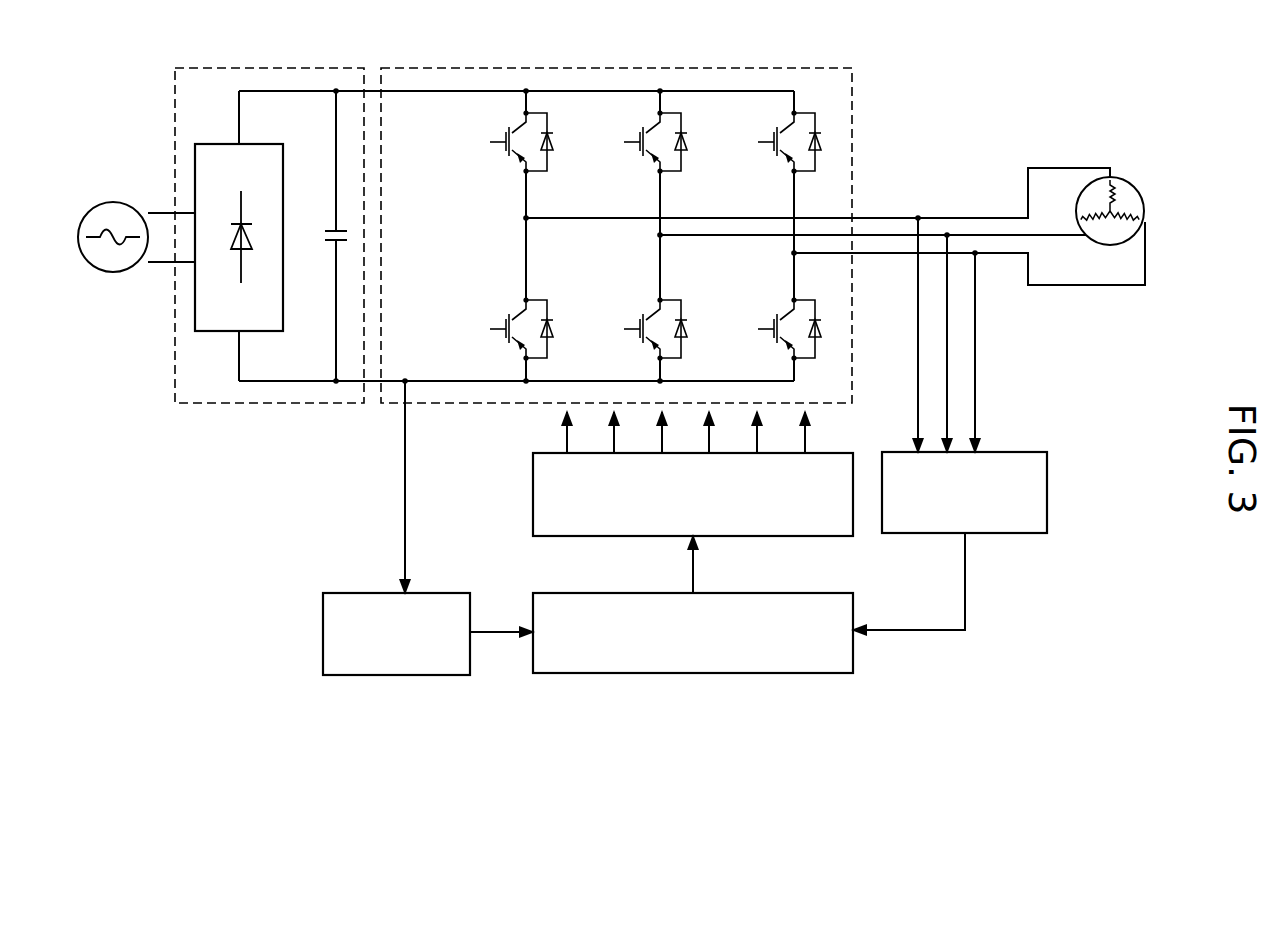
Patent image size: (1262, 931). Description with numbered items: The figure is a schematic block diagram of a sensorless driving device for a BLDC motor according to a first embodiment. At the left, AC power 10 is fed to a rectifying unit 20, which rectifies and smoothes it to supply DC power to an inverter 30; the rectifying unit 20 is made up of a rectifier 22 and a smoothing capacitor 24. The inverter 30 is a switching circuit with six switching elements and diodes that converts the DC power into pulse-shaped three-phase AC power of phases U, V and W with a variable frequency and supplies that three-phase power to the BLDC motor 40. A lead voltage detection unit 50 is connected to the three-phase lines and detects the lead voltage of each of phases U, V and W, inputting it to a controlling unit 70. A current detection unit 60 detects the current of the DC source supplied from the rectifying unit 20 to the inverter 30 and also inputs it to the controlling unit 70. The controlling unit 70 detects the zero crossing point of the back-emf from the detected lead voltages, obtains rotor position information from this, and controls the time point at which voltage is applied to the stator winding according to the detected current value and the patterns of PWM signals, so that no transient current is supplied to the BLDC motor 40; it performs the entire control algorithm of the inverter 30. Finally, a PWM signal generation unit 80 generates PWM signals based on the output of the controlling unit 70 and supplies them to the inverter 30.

The AC power 10 is at (93, 206).
The rectifying unit 20 is at (306, 68).
The rectifier 22 is at (258, 144).
The smoothing capacitor 24 is at (326, 231).
The inverter 30 is at (697, 67).
The BLDC motor 40 is at (1134, 191).
The lead voltage detection unit 50 is at (1048, 490).
The current detection unit 60 is at (323, 633).
The controlling unit 70 is at (855, 600).
The PWM signal generation unit 80 is at (533, 494).